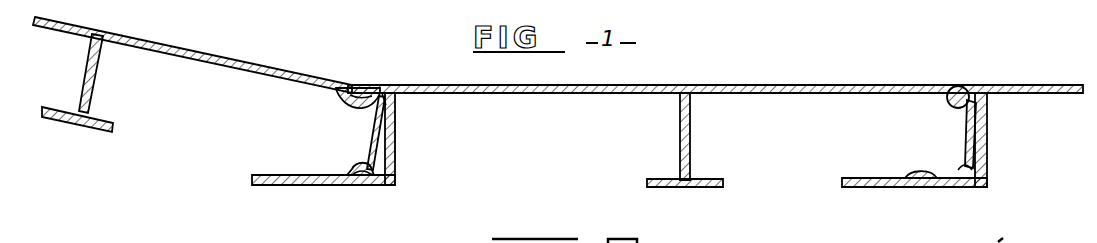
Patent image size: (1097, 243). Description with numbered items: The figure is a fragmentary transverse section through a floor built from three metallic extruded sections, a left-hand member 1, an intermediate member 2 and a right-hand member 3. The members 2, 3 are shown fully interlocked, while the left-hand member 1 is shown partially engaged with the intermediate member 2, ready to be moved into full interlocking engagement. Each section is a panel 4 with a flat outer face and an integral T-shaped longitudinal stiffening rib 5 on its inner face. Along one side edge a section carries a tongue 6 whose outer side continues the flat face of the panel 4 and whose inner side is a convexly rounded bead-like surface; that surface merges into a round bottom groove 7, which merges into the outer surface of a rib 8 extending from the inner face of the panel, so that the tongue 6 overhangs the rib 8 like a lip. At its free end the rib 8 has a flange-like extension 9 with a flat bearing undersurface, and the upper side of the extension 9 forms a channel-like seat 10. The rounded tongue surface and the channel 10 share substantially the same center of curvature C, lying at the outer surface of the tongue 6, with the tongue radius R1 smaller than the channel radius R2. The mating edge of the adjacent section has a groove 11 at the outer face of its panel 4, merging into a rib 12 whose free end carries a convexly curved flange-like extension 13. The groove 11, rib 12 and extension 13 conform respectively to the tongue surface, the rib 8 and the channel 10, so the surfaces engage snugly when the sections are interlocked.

The left-hand member 1 is at (97, 131).
The intermediate member 2 is at (379, 186).
The right-hand member 3 is at (910, 188).
The panel 4 is at (195, 51).
The T-shaped longitudinal stiffening rib 5 is at (680, 132).
The tongue 6 is at (378, 91).
The round bottom groove 7 is at (400, 95).
The rib 8 is at (396, 140).
The flange-like extension 9 is at (285, 187).
The channel-like seat 10 is at (348, 186).
The groove 11 is at (357, 87).
The rib 12 is at (372, 138).
The flange-like extension 13 is at (345, 164).
The center of curvature C is at (960, 89).
The radius of the tongue surface R1 is at (940, 104).
The radius of the channel R2 is at (958, 107).